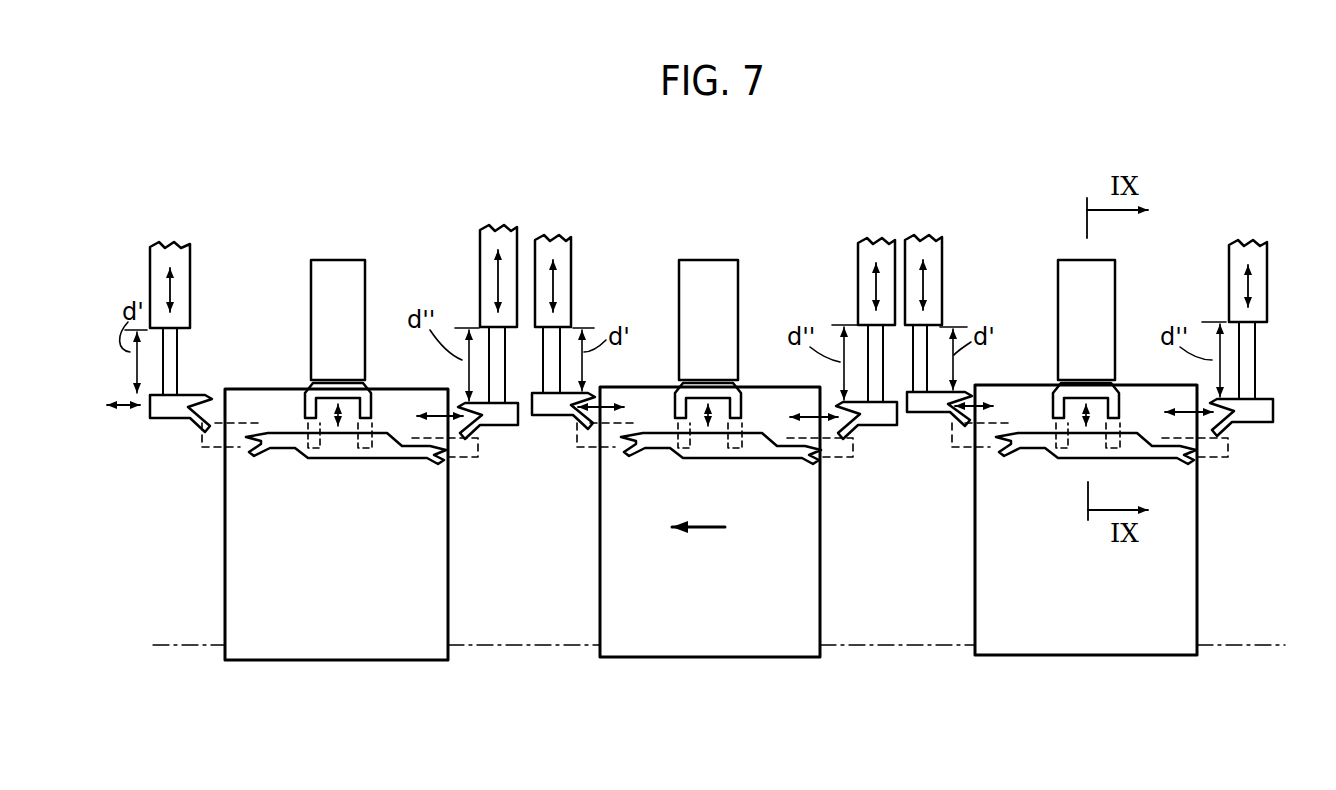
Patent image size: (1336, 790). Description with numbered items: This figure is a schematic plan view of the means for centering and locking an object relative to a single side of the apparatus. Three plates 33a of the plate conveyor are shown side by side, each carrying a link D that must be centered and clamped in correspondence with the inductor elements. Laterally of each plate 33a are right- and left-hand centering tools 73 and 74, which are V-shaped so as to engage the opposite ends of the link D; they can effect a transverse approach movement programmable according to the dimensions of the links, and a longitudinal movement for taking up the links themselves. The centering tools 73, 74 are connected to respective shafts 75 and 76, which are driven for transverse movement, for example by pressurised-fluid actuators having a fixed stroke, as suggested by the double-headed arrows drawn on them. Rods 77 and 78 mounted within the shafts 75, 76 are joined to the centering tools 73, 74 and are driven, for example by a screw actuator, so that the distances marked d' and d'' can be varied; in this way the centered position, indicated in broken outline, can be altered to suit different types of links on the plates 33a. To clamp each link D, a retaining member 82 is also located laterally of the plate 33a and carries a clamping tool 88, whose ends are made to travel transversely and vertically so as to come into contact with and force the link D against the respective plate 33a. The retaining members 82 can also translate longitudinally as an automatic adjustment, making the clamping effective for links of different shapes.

The plate 33a is at (322, 625).
The right-hand centering tool 73 is at (178, 418).
The left-hand centering tool 74 is at (488, 416).
The shaft 75 is at (176, 248).
The shaft 76 is at (498, 240).
The rod 77 is at (172, 362).
The rod 78 is at (497, 343).
The retaining member 82 is at (371, 287).
The clamping tool 88 is at (316, 397).
The link D is at (343, 445).